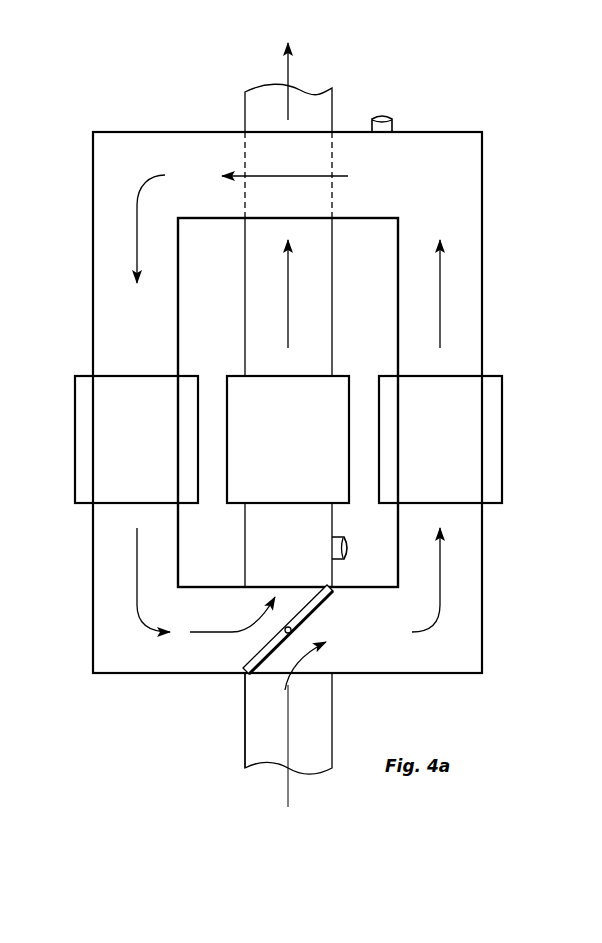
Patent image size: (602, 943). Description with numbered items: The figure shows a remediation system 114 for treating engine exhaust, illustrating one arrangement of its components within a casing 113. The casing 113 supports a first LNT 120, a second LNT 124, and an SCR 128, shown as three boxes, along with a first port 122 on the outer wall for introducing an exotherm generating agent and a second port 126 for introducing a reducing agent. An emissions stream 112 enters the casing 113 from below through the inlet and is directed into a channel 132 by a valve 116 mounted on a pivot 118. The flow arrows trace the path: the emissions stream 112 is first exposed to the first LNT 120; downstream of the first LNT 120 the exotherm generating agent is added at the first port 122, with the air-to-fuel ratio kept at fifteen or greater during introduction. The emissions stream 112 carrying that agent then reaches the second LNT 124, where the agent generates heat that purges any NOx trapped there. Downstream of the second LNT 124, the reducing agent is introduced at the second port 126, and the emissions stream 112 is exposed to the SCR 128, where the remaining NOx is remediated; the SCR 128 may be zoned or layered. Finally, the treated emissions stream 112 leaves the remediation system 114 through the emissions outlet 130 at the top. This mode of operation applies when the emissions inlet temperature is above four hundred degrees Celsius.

The emissions stream 112 is at (277, 797).
The casing 113 is at (266, 740).
The remediation system 114 is at (245, 713).
The valve 116 is at (328, 607).
The pivot 118 is at (288, 628).
The first LNT 120 is at (420, 408).
The first port 122 is at (383, 115).
The second LNT 124 is at (118, 408).
The second port 126 is at (350, 546).
The SCR 128 is at (265, 408).
The emissions outlet 130 is at (255, 100).
The channel 132 is at (447, 581).